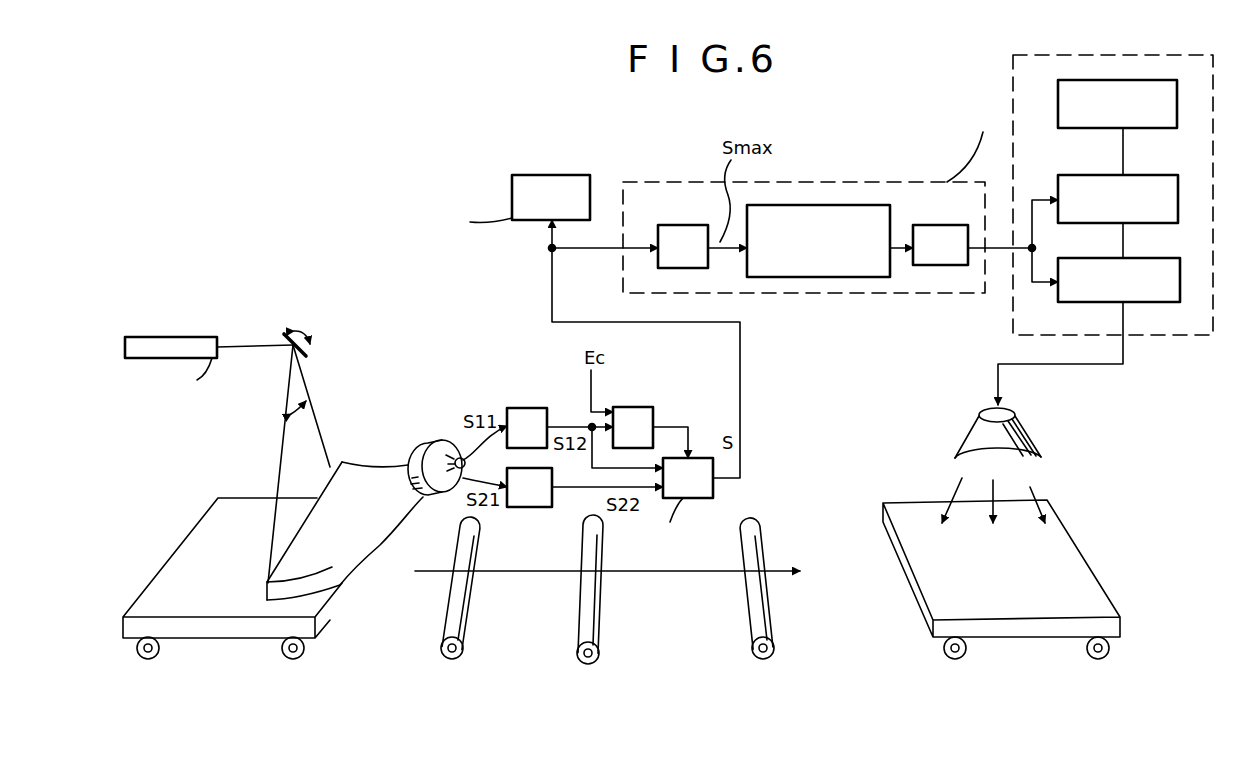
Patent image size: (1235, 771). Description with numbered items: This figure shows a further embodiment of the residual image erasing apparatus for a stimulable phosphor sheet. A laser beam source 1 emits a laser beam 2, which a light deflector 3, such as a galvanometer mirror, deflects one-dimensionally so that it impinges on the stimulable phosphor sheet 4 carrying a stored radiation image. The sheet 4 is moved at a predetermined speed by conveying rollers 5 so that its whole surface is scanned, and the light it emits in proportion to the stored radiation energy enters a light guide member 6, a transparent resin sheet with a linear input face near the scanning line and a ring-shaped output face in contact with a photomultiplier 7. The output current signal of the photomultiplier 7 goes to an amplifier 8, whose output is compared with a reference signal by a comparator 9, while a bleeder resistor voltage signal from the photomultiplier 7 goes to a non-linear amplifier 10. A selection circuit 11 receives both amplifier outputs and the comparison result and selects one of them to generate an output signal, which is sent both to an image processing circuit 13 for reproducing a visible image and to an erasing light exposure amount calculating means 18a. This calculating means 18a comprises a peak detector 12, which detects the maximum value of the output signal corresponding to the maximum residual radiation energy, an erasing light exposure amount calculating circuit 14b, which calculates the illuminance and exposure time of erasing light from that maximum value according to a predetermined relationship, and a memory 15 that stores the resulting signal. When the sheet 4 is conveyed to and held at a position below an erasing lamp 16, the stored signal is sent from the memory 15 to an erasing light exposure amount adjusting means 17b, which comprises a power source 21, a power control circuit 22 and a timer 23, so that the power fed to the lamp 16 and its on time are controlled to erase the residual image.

The laser beam source 1 is at (172, 338).
The laser beam 2 is at (237, 345).
The light deflector 3 is at (287, 333).
The stimulable phosphor sheet 4 is at (182, 553).
The conveying rollers 5 is at (159, 652).
The light guide member 6 is at (362, 482).
The photomultiplier 7 is at (438, 446).
The amplifier 8 is at (518, 408).
The comparator 9 is at (640, 407).
The non-linear amplifier 10 is at (538, 507).
The selection circuit 11 is at (705, 498).
The peak detector 12 is at (680, 225).
The image processing circuit 13 is at (546, 175).
The erasing light exposure amount calculating circuit 14b is at (828, 205).
The memory 15 is at (932, 225).
The erasing lamp 16 is at (1046, 449).
The erasing light exposure amount adjusting means 17b is at (1013, 75).
The erasing light exposure amount calculating means 18a is at (912, 182).
The power source 21 is at (1150, 128).
The power control circuit 22 is at (1157, 223).
The timer 23 is at (1160, 302).